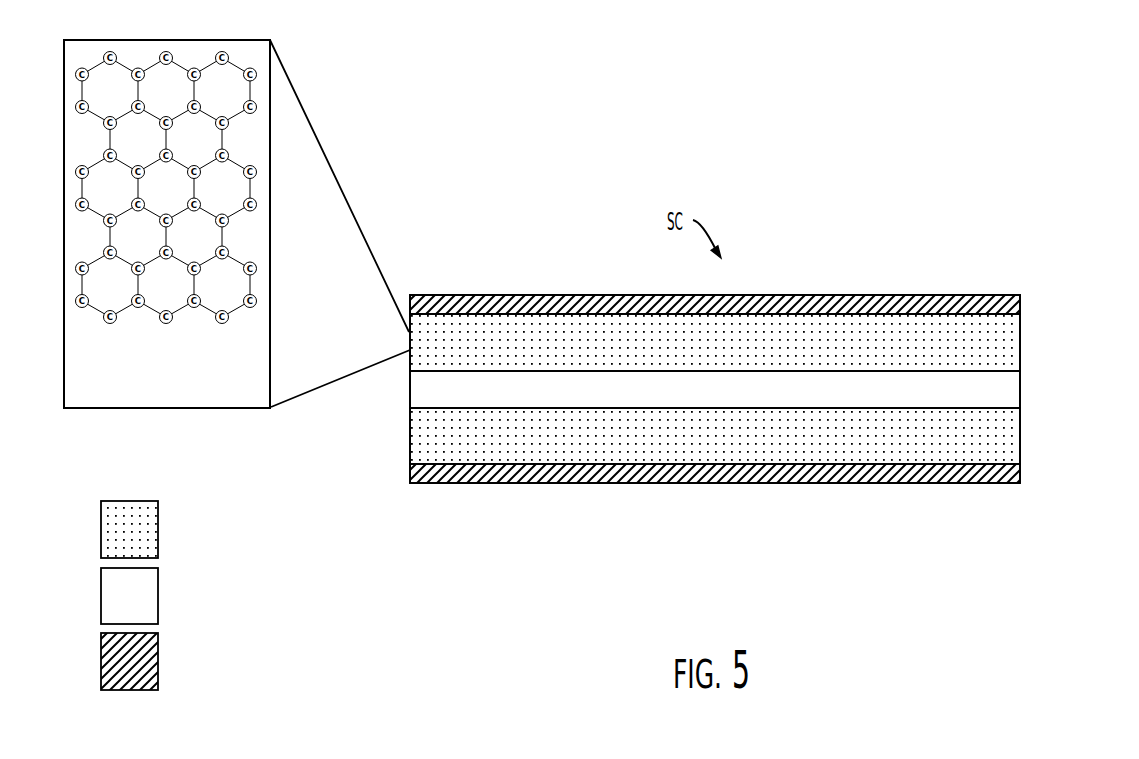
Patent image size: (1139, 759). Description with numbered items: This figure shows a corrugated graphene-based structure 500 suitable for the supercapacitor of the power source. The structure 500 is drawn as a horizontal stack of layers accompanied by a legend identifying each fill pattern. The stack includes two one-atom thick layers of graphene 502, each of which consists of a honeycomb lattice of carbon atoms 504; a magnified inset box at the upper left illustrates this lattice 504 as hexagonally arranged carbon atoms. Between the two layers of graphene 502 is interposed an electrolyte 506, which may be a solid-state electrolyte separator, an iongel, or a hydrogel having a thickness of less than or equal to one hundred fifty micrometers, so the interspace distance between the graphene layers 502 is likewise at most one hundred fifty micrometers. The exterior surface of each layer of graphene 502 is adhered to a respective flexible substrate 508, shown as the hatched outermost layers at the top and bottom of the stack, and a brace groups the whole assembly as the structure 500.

The corrugated graphene-based structure 500 is at (1048, 295).
The layers of graphene 502 is at (560, 436).
The honeycomb lattice of carbon atoms 504 is at (237, 224).
The electrolyte 506 is at (560, 497).
The flexible substrate 508 is at (560, 492).